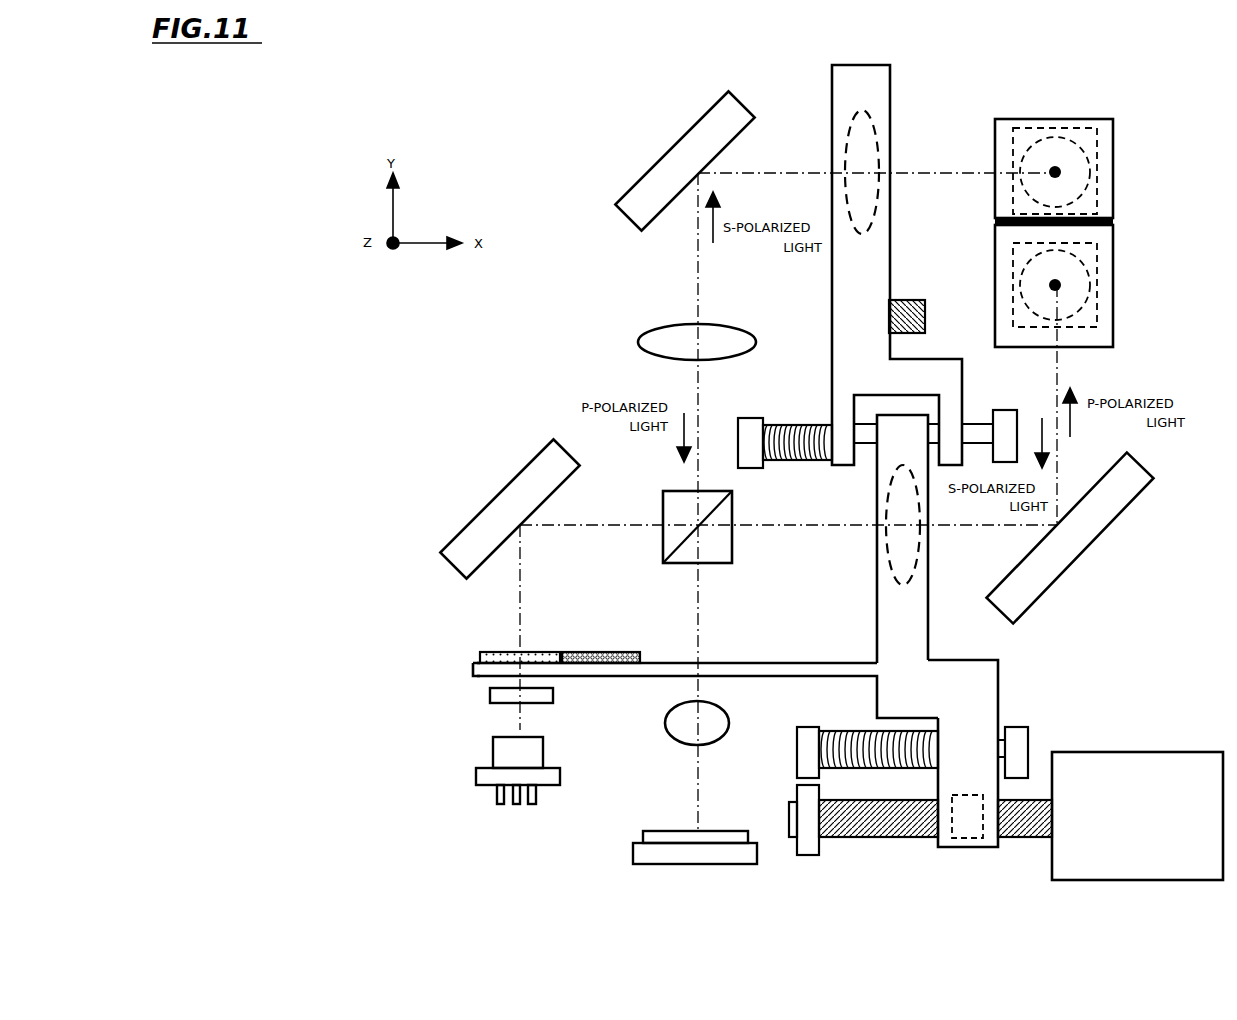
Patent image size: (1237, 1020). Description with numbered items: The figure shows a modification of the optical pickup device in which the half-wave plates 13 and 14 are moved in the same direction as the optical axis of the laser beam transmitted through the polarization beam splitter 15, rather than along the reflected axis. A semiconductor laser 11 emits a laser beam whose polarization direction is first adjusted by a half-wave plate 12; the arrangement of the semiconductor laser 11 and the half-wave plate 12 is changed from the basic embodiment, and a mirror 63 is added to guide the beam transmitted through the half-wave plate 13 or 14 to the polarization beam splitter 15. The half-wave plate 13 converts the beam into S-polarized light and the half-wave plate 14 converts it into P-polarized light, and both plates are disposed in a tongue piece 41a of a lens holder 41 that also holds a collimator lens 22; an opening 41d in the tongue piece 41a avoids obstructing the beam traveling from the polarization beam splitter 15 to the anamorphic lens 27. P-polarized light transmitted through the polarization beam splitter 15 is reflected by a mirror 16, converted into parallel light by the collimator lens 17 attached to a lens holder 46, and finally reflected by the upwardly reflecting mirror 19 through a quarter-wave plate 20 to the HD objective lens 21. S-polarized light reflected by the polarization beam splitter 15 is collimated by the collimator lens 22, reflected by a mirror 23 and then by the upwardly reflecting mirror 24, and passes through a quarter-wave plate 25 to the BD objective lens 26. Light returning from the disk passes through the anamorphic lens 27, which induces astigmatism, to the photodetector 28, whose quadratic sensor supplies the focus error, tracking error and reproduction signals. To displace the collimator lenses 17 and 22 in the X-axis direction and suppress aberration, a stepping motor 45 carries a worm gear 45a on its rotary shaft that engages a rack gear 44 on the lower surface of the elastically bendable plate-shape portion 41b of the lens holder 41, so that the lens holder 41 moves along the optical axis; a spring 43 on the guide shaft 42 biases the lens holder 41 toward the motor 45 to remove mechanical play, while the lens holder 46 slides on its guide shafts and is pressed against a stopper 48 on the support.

The semiconductor laser 11 is at (490, 805).
The half-wave plate 12 is at (497, 703).
The half-wave plate 13 is at (493, 648).
The half-wave plate 14 is at (598, 645).
The polarization beam splitter 15 is at (723, 553).
The mirror 16 is at (1093, 523).
The collimator lens 17 is at (887, 513).
The upwardly reflecting mirror 19 is at (1113, 338).
The quarter-wave plate 20 is at (1098, 253).
The HD objective lens 21 is at (1045, 327).
The collimator lens 22 is at (857, 112).
The mirror 23 is at (705, 118).
The upwardly reflecting mirror 24 is at (1113, 140).
The quarter-wave plate 25 is at (1080, 130).
The BD objective lens 26 is at (1048, 148).
The anamorphic lens 27 is at (677, 728).
The photodetector 28 is at (658, 865).
The lens holder 41 is at (970, 702).
The tongue piece 41a is at (475, 677).
The plate-shape portion 41b is at (993, 848).
The opening 41d is at (732, 662).
The guide shaft 42 is at (800, 422).
The spring 43 is at (858, 732).
The rack gear 44 is at (967, 835).
The motor 45 is at (1188, 762).
The worm gear 45a is at (877, 838).
The lens holder 46 is at (853, 340).
The stopper 48 is at (925, 310).
The mirror 63 is at (495, 507).